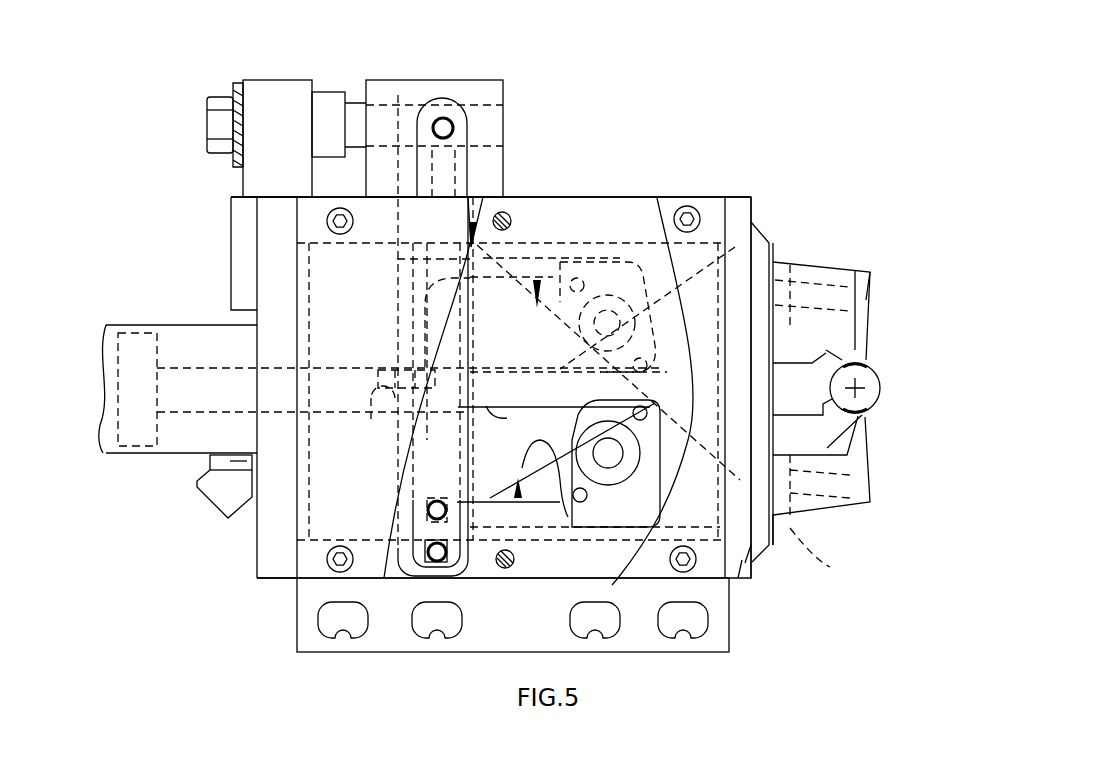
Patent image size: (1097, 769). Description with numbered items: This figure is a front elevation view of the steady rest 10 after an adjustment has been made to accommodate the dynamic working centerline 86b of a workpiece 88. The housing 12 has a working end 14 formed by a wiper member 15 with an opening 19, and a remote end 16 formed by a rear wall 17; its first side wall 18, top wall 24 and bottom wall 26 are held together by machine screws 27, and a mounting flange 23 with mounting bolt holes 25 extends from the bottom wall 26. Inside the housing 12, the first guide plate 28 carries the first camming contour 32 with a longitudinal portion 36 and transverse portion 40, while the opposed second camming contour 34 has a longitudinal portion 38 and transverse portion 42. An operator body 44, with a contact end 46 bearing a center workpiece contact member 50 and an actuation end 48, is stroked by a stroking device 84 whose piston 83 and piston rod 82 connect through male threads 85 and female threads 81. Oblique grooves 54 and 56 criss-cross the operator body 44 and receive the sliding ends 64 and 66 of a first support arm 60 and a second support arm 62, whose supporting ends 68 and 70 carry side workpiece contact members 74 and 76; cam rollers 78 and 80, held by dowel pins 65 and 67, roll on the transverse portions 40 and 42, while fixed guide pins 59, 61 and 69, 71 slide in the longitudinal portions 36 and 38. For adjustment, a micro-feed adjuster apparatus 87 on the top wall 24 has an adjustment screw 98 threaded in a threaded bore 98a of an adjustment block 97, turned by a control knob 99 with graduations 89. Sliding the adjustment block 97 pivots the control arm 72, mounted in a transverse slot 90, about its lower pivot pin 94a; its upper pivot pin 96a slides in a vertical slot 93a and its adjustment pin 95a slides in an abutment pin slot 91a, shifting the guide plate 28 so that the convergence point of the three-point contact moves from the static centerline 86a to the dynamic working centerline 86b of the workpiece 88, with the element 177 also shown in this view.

The steady rest 10 is at (170, 212).
The housing 12 is at (658, 183).
The working end 14 is at (752, 208).
The wiper member 15 is at (745, 563).
The remote end 16 is at (258, 551).
The rear wall 17 is at (285, 573).
The first side wall 18 is at (742, 560).
The opening 19 is at (832, 568).
The mounting flange 23 is at (388, 632).
The top wall 24 is at (670, 197).
The mounting bolt holes 25 is at (336, 642).
The bottom wall 26 is at (583, 568).
The machine screws 27 is at (508, 216).
The first guide plate 28 is at (627, 525).
The first camming contour 32 is at (568, 524).
The second camming contour 34 is at (571, 243).
The longitudinal portion 36 is at (511, 420).
The longitudinal portion 38 is at (487, 368).
The transverse portion 40 is at (640, 497).
The transverse portion 42 is at (656, 312).
The operator body 44 is at (491, 503).
The contact end 46 is at (774, 245).
The actuation end 48 is at (397, 259).
The center workpiece contact member 50 is at (818, 345).
The first groove 54 is at (523, 500).
The second groove 56 is at (598, 243).
The fixed guide pin 59 is at (545, 470).
The first support arm 60 is at (829, 256).
The fixed guide pin 61 is at (647, 412).
The second support arm 62 is at (856, 525).
The sliding end 64 is at (520, 570).
The dowel pin 65 is at (614, 455).
The sliding end 66 is at (466, 238).
The dowel pin 67 is at (660, 334).
The supporting end 68 is at (866, 297).
The fixed guide pin 69 is at (648, 392).
The supporting end 70 is at (858, 474).
The fixed guide pin 71 is at (558, 328).
The control arm 72 is at (462, 163).
The side workpiece contact member 74 is at (868, 343).
The side workpiece contact member 76 is at (857, 417).
The first cam roller 78 is at (562, 389).
The second cam roller 80 is at (583, 358).
The female threads 81 is at (367, 418).
The piston rod 82 is at (190, 378).
The piston 83 is at (140, 347).
The stroking device 84 is at (176, 448).
The male threads 85 is at (383, 362).
The static centerline 86a is at (832, 396).
The dynamic working centerline 86b is at (860, 388).
The micro-feed adjuster apparatus 87 is at (290, 66).
The workpiece 88 is at (872, 392).
The graduations 89 is at (236, 80).
The transverse slot 90 is at (400, 286).
The abutment pin slot 91a is at (407, 517).
The vertical slot 93a is at (450, 100).
The lower pivot pin 94a is at (432, 555).
The adjustment pin 95a is at (430, 500).
The upper pivot pin 96a is at (449, 124).
The adjustment block 97 is at (480, 88).
The adjustment screw 98 is at (360, 112).
The threaded bore 98a is at (403, 112).
The control knob 99 is at (220, 125).
The curved guide 177 is at (470, 445).